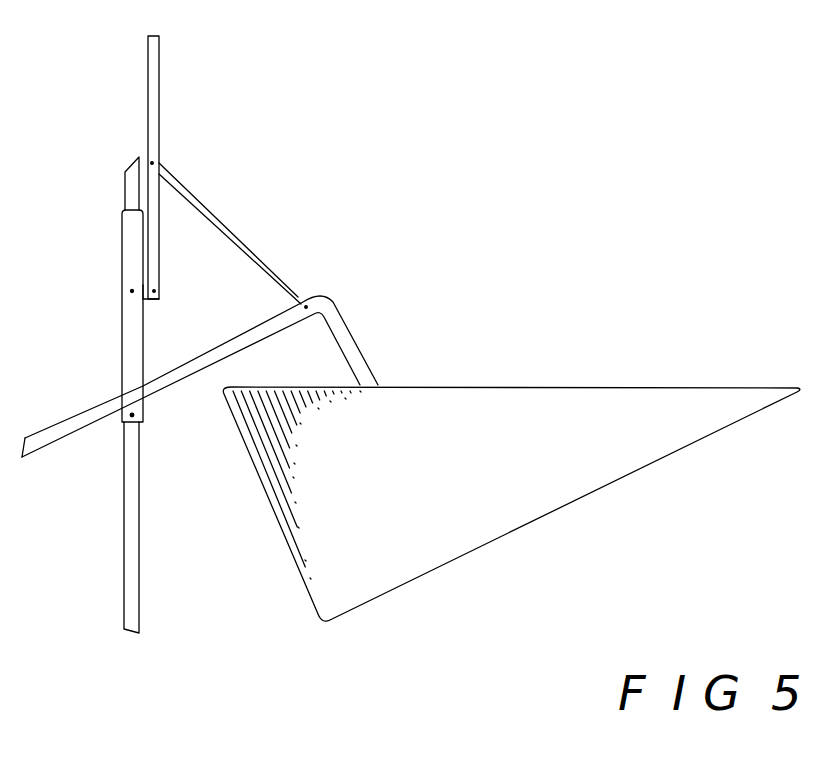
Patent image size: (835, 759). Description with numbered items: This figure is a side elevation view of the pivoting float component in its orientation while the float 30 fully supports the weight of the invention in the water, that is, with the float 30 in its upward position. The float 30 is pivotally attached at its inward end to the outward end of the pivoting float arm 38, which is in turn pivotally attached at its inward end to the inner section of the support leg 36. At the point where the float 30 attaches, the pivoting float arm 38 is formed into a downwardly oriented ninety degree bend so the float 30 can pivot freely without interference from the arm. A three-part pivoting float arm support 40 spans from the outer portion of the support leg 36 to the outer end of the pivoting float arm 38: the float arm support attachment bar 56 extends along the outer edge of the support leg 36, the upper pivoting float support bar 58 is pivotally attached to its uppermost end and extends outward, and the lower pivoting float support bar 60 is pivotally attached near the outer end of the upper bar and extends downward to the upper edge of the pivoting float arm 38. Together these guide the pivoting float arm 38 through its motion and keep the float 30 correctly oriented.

The float 30 is at (548, 385).
The support leg 36 is at (118, 520).
The pivoting float arm 38 is at (82, 410).
The pivoting float arm support 40 is at (368, 211).
The float arm support attachment bar 56 is at (118, 287).
The upper pivoting float support bar 58 is at (161, 132).
The lower pivoting float support bar 60 is at (275, 268).